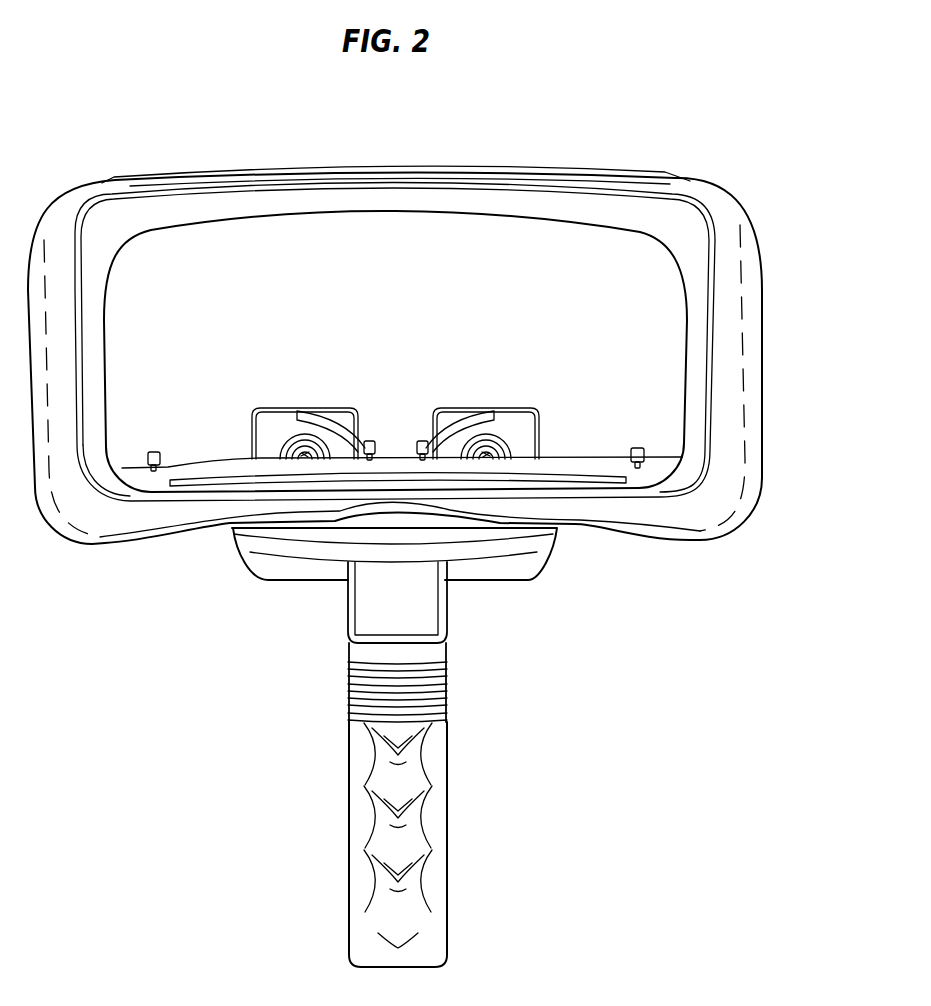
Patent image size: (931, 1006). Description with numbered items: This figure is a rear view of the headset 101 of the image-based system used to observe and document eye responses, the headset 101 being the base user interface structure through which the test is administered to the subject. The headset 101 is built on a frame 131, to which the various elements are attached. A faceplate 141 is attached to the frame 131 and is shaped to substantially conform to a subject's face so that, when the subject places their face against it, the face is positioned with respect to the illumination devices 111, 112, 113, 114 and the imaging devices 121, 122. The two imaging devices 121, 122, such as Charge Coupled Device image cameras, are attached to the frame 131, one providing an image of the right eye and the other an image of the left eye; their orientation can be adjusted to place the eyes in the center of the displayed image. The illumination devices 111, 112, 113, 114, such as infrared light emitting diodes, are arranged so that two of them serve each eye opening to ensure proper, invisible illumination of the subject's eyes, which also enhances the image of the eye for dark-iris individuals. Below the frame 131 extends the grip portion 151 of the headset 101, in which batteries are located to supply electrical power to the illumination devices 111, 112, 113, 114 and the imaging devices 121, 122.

The headset 101 is at (800, 118).
The illumination device 111 is at (158, 452).
The illumination device 112 is at (370, 441).
The illumination device 113 is at (421, 441).
The illumination device 114 is at (638, 448).
The imaging device 121 is at (273, 400).
The imaging device 122 is at (520, 397).
The frame 131 is at (560, 556).
The faceplate 141 is at (762, 336).
The grip portion 151 is at (438, 815).